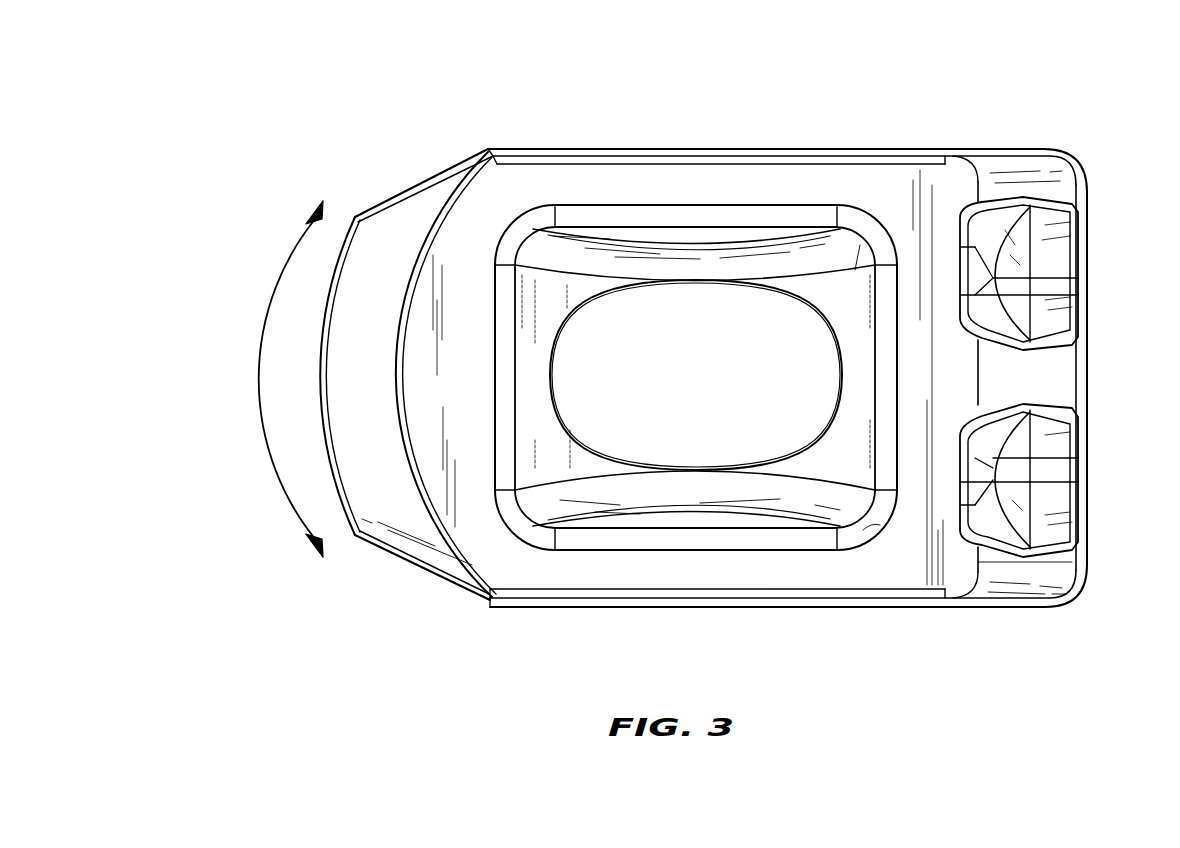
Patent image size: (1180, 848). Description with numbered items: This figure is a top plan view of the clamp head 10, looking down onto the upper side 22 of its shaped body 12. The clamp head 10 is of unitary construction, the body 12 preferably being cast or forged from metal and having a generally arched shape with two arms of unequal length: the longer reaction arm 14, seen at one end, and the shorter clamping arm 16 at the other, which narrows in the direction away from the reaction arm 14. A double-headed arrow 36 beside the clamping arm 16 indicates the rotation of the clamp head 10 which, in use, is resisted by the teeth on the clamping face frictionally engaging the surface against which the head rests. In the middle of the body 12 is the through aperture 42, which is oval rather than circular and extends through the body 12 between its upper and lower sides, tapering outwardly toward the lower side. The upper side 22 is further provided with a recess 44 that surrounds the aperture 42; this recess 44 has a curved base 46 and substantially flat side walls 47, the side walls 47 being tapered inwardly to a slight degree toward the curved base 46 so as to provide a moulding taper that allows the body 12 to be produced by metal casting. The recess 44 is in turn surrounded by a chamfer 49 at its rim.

The clamp head 10 is at (1026, 100).
The body 12 is at (648, 607).
The reaction arm 14 is at (1090, 378).
The clamping arm 16 is at (398, 543).
The upper side 22 is at (622, 178).
The arrow 36 is at (258, 372).
The through aperture 42 is at (614, 422).
The recess 44 is at (563, 271).
The curved base 46 is at (853, 290).
The side walls 47 is at (686, 255).
The chamfer 49 is at (878, 528).